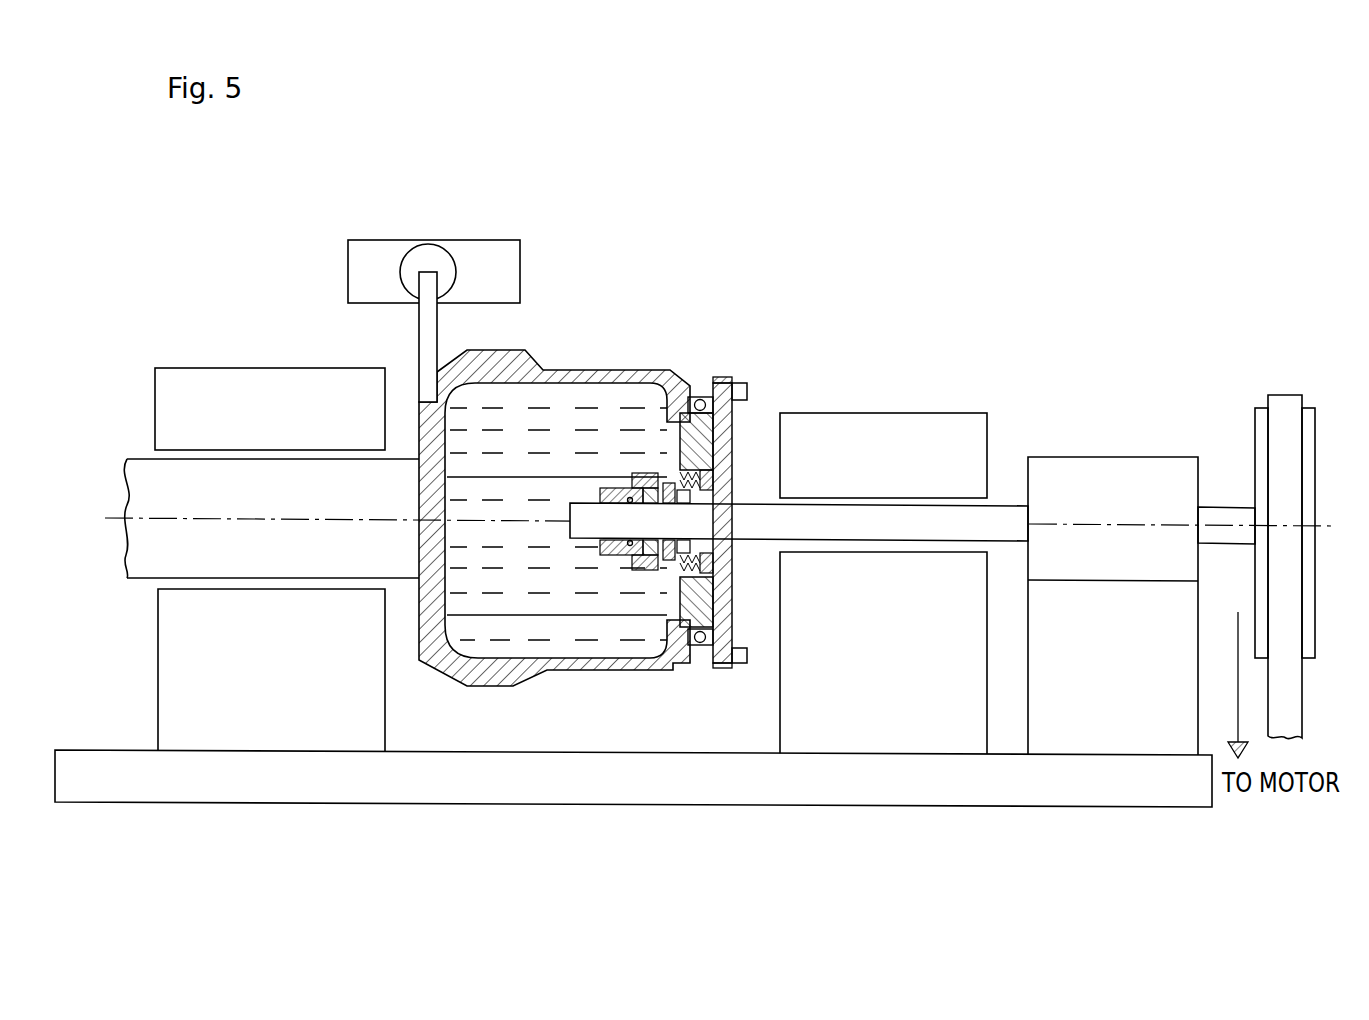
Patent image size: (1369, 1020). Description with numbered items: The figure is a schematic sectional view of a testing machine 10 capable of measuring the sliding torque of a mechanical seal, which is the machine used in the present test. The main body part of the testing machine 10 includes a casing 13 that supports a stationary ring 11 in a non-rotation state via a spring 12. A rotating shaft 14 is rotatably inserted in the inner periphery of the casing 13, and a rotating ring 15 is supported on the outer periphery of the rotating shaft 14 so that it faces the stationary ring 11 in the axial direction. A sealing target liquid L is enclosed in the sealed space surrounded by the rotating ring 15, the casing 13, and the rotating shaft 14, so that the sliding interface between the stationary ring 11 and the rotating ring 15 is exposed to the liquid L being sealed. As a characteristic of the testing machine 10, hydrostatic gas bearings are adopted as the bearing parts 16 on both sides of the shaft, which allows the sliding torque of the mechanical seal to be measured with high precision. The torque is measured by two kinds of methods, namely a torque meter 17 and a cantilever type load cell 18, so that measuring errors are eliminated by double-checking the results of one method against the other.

The testing machine 10 is at (813, 213).
The stationary ring 11 is at (670, 562).
The spring 12 is at (715, 590).
The casing 13 is at (717, 667).
The rotating shaft 14 is at (767, 515).
The rotating ring 15 is at (630, 562).
The bearing parts 16 is at (290, 390).
The torque meter 17 is at (1130, 457).
The cantilever type load cell 18 is at (445, 241).
The sealing target liquid L is at (547, 448).